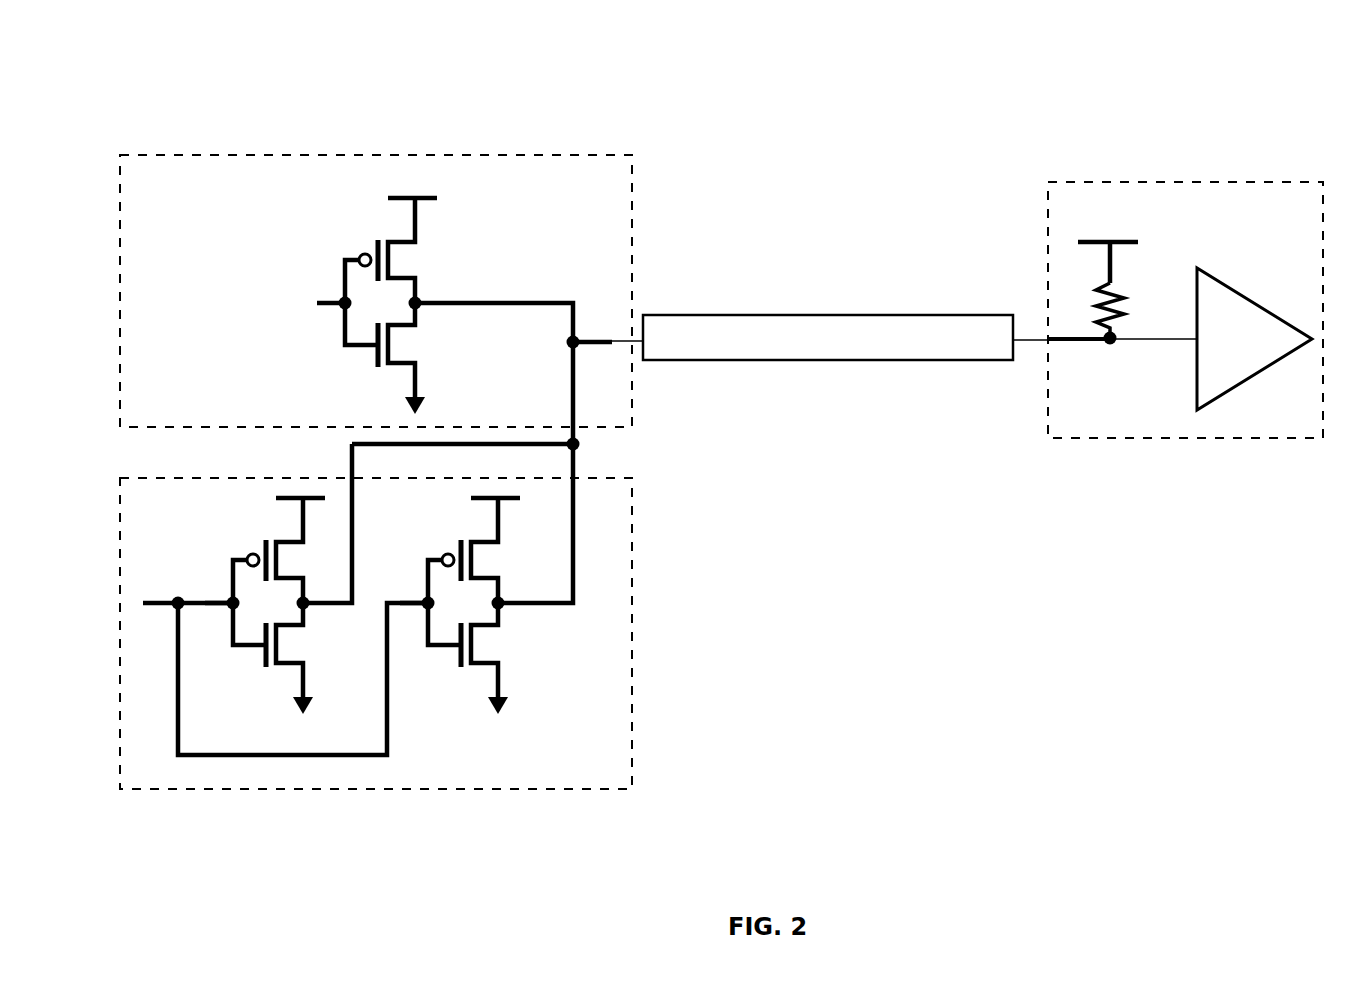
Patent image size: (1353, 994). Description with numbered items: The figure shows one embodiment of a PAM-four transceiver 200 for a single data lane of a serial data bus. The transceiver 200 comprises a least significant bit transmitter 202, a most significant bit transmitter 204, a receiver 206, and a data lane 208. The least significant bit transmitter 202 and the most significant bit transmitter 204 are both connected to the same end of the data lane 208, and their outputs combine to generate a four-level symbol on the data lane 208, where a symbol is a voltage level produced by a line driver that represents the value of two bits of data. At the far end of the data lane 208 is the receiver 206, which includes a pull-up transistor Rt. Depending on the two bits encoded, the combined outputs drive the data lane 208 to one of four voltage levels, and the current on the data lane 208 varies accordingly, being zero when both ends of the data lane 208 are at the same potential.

The PAM-4 transceiver 200 is at (1274, 76).
The least significant bit transmitter 202 is at (660, 398).
The most significant bit transmitter 204 is at (555, 622).
The receiver 206 is at (1185, 332).
The data lane 208 is at (845, 337).